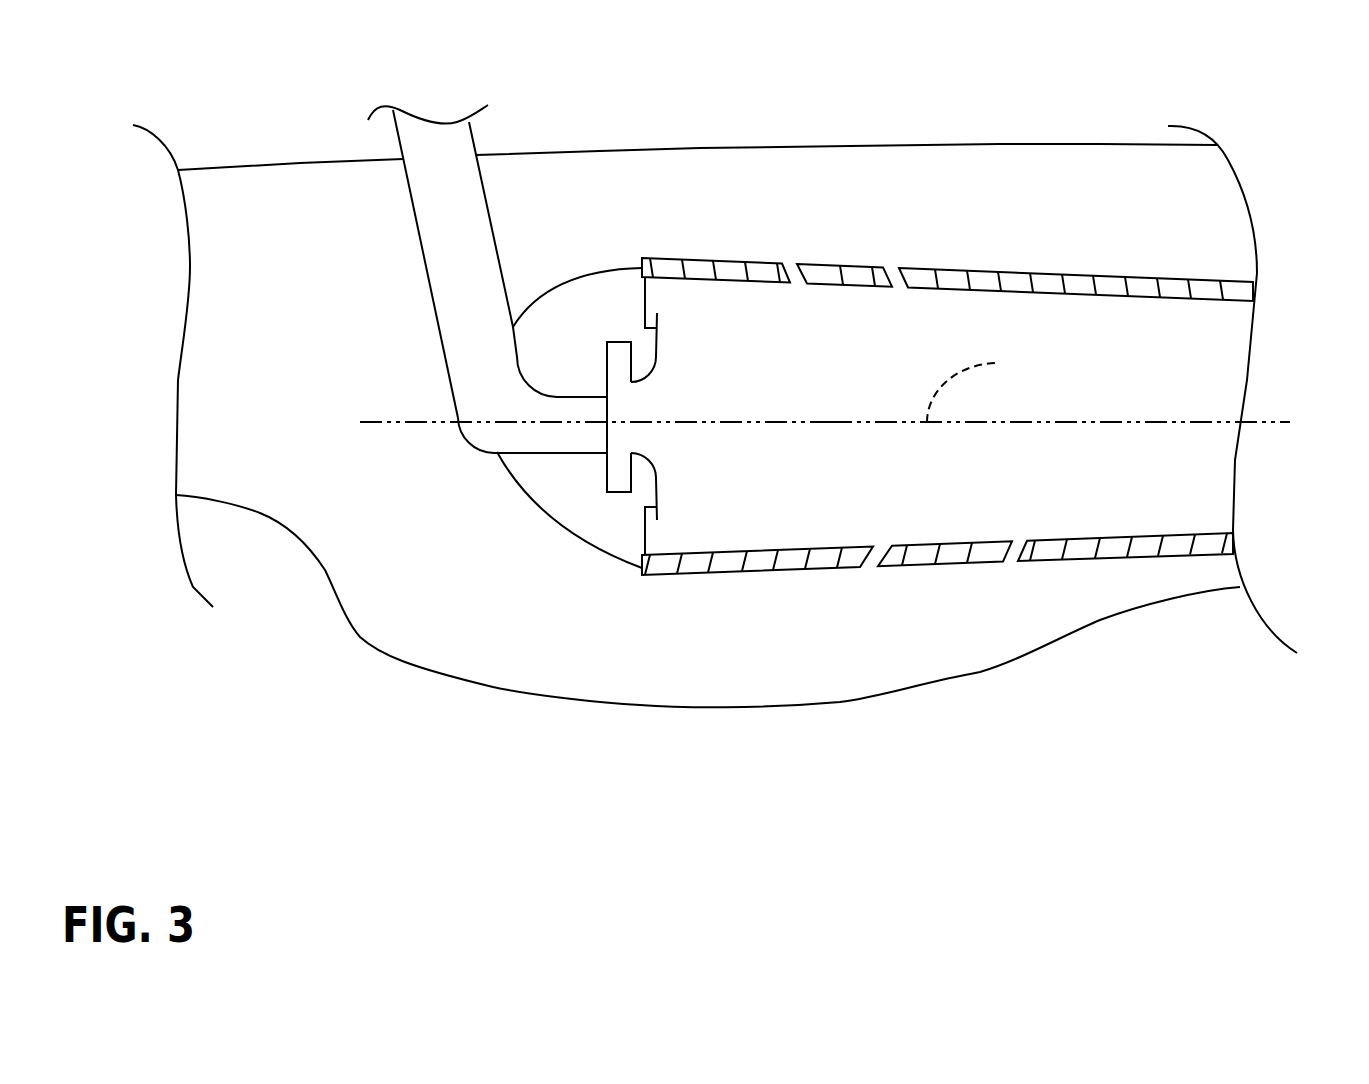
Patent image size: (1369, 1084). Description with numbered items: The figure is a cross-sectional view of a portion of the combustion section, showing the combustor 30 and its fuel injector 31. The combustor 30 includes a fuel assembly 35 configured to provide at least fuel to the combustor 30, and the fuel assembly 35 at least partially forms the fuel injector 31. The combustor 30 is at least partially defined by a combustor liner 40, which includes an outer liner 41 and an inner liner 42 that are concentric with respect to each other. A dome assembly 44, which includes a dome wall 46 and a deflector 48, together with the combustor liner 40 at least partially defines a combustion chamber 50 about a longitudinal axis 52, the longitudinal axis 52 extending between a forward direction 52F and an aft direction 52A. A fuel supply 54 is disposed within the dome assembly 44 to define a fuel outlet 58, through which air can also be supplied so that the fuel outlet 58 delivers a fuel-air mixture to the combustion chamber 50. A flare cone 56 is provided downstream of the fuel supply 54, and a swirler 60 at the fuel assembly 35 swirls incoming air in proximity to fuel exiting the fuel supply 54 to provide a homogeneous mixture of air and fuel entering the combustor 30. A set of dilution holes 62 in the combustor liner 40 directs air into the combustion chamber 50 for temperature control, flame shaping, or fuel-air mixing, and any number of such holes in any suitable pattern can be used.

The combustor 30 is at (1080, 178).
The fuel injector 31 is at (483, 351).
The fuel assembly 35 is at (555, 458).
The combustor liner 40 is at (947, 201).
The outer liner 41 is at (953, 280).
The inner liner 42 is at (948, 558).
The dome assembly 44 is at (573, 540).
The dome wall 46 is at (572, 280).
The deflector 48 is at (643, 533).
The combustion chamber 50 is at (1118, 318).
The longitudinal axis 52 is at (823, 391).
The forward direction 52F is at (568, 418).
The aft direction 52A is at (1085, 418).
The fuel supply 54 is at (457, 432).
The flare cone 56 is at (658, 363).
The fuel outlet 58 is at (635, 435).
The swirler 60 is at (620, 342).
The set of dilution holes 62 is at (790, 255).